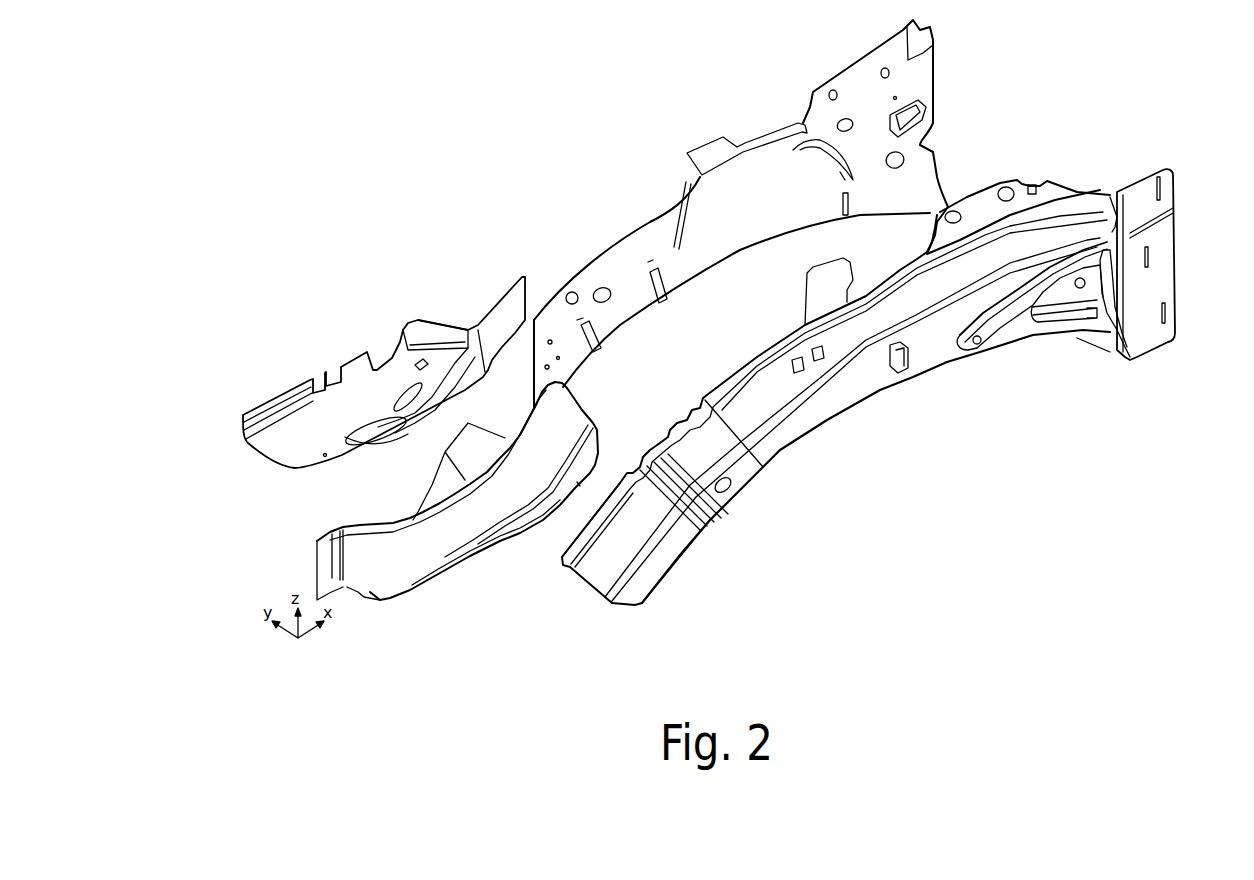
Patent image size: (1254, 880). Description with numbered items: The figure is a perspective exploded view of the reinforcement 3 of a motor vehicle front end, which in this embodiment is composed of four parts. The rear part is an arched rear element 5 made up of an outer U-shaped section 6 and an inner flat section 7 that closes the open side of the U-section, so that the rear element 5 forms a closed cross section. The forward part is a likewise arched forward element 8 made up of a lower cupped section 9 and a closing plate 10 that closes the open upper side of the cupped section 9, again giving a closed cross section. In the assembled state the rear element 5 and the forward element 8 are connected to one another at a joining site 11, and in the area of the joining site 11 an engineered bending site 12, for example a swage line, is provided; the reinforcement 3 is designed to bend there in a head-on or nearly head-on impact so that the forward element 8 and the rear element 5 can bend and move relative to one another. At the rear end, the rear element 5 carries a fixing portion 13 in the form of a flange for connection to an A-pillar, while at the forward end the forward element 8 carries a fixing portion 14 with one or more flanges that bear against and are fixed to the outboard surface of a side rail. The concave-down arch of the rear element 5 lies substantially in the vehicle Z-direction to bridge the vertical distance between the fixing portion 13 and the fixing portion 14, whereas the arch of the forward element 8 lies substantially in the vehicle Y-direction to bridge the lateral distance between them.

The reinforcement 3 is at (471, 165).
The rear element 5 is at (872, 449).
The outer U-shaped section 6 is at (927, 347).
The inner flat section 7 is at (727, 182).
The forward element 8 is at (493, 627).
The lower cupped section 9 is at (397, 570).
The closing plate 10 is at (287, 430).
The joining site 11 is at (676, 589).
The engineered bending site 12 is at (710, 533).
The fixing portion 13 is at (1150, 333).
The fixing portion 14 is at (325, 557).